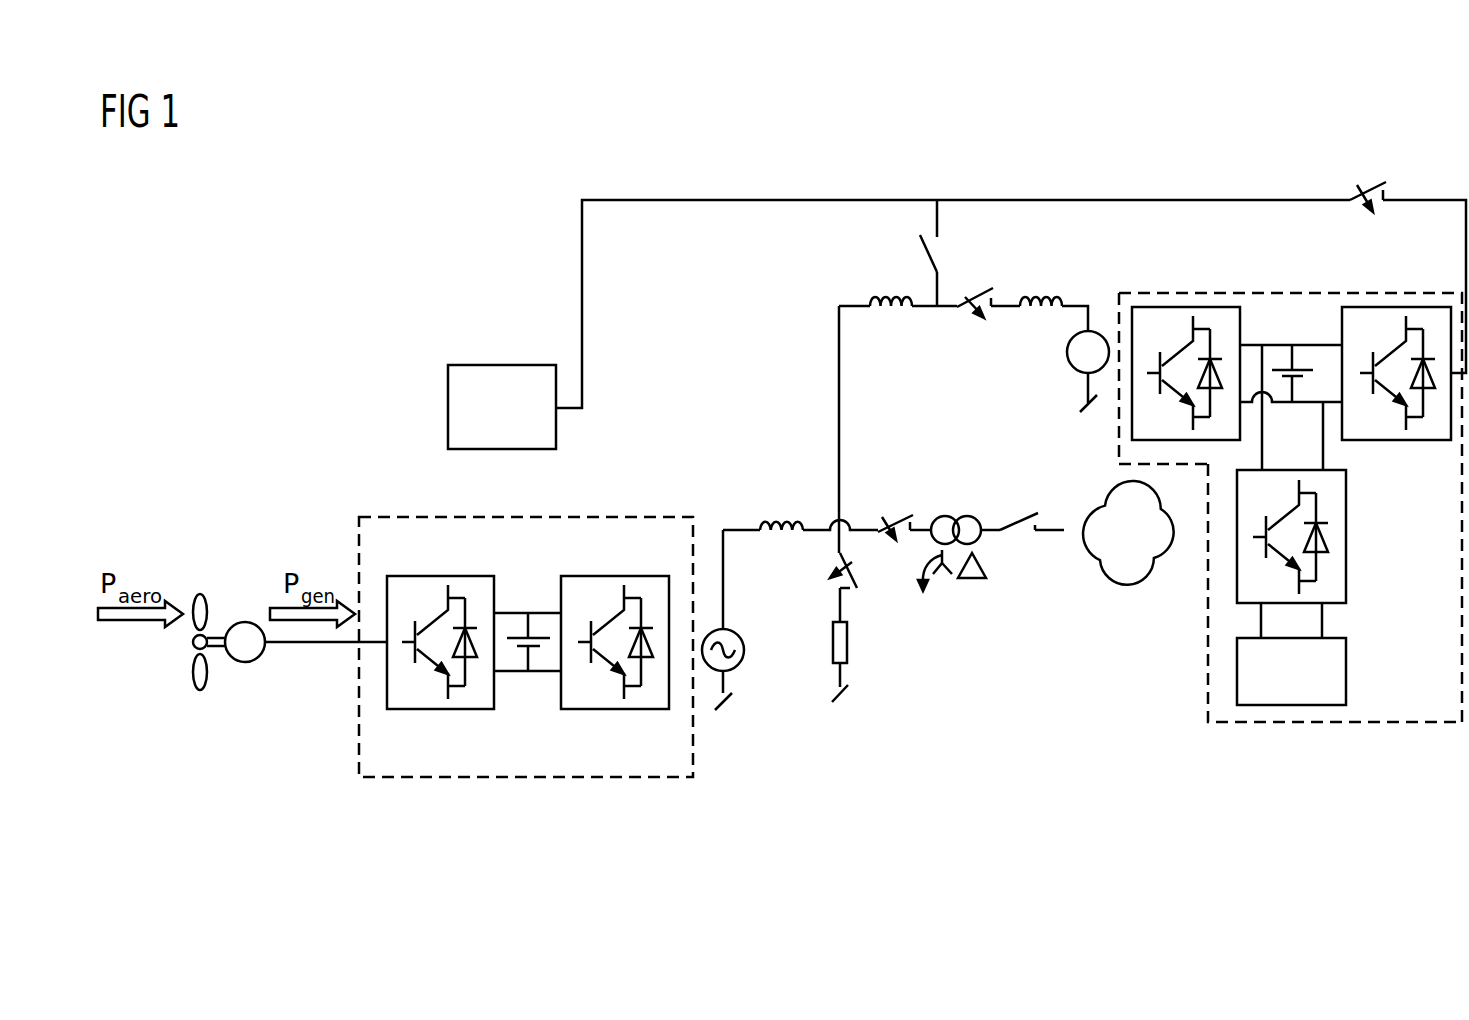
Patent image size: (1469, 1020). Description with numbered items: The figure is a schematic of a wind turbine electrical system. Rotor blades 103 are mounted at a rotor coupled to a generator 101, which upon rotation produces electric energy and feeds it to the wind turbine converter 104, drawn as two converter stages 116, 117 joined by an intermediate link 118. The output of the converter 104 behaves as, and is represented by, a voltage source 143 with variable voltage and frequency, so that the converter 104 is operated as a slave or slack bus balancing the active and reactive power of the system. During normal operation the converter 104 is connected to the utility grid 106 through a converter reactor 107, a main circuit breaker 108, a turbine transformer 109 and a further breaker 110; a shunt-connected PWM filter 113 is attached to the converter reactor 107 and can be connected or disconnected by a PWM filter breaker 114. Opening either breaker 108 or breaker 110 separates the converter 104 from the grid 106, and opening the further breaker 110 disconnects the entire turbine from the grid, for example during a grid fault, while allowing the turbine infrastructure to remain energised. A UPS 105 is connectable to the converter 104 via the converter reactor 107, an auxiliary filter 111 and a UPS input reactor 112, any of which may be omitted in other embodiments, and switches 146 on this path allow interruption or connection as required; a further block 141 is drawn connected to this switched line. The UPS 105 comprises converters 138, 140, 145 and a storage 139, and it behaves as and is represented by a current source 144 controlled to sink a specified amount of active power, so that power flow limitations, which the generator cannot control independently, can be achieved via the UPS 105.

The generator 101 is at (245, 622).
The rotor blades 103 is at (200, 690).
The wind turbine converter 104 is at (670, 517).
The UPS 105 is at (1337, 722).
The utility grid 106 is at (1125, 588).
The converter reactor 107 is at (783, 530).
The main circuit breaker 108 is at (887, 518).
The turbine transformer 109 is at (945, 516).
The further breaker 110 is at (1020, 512).
The auxiliary filter 111 is at (895, 302).
The UPS input reactor 112 is at (1047, 287).
The PWM filter 113 is at (847, 643).
The circuit breaker 114 is at (857, 588).
The generator-side converter 116 is at (441, 709).
The grid-side converter 117 is at (615, 709).
The DC link capacitor 118 is at (528, 690).
The converter 138 is at (1185, 307).
The storage 139 is at (1346, 672).
The converter 140 is at (1398, 307).
The controller 141 is at (503, 365).
The voltage source 143 is at (744, 650).
The current source 144 is at (1073, 367).
The converter 145 is at (1346, 537).
The switches 146 is at (1377, 157).